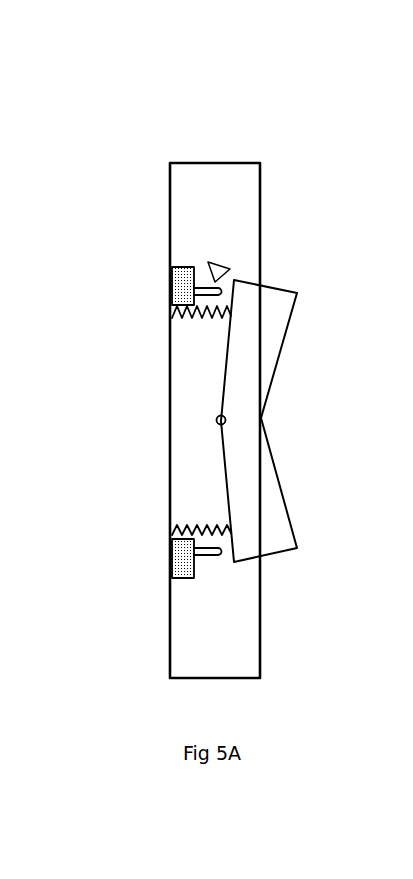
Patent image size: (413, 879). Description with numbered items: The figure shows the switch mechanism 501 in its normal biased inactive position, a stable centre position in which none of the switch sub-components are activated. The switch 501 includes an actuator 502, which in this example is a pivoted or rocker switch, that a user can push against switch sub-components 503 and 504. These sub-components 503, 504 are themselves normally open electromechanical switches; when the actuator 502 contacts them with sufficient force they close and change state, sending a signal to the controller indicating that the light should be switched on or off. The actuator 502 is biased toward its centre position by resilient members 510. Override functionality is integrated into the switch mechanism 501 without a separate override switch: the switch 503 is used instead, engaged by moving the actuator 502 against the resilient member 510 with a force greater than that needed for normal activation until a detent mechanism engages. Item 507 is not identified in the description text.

The switch mechanism 501 is at (155, 120).
The actuator 502 is at (272, 331).
The switch sub-component 503 is at (187, 277).
The switch sub-component 504 is at (173, 578).
The direction of rocker movement 507 is at (210, 262).
The resilient member 510 is at (172, 315).